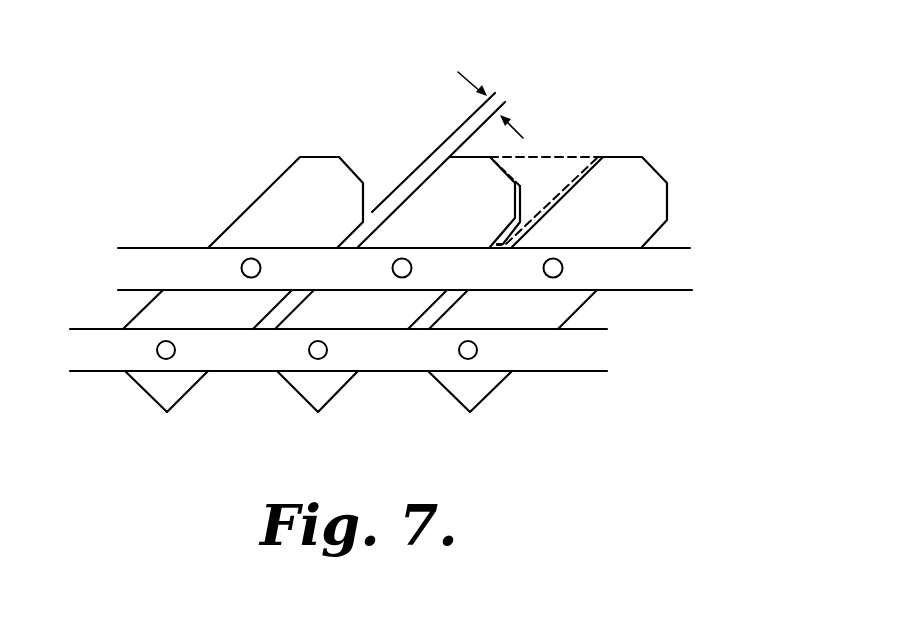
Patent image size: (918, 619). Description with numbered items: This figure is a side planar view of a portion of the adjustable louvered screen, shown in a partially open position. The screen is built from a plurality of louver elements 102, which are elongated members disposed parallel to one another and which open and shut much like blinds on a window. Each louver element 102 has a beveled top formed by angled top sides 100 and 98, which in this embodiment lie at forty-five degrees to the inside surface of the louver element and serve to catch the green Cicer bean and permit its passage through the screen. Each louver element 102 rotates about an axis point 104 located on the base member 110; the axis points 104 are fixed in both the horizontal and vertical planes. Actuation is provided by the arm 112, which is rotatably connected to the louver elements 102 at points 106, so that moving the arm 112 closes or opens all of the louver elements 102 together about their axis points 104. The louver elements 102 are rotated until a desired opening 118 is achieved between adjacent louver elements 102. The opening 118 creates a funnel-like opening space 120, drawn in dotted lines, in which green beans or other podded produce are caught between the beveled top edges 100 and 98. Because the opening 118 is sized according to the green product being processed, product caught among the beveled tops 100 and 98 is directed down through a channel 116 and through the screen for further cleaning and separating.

The angled top side 98 is at (366, 198).
The angled top side 100 is at (318, 156).
The louver element 102 is at (148, 318).
The axis point 104 is at (160, 357).
The point 106 is at (567, 265).
The base member 110 is at (593, 360).
The arm 112 is at (677, 253).
The channel 116 is at (265, 320).
The opening 118 is at (504, 95).
The funnel-like opening space 120 is at (570, 157).